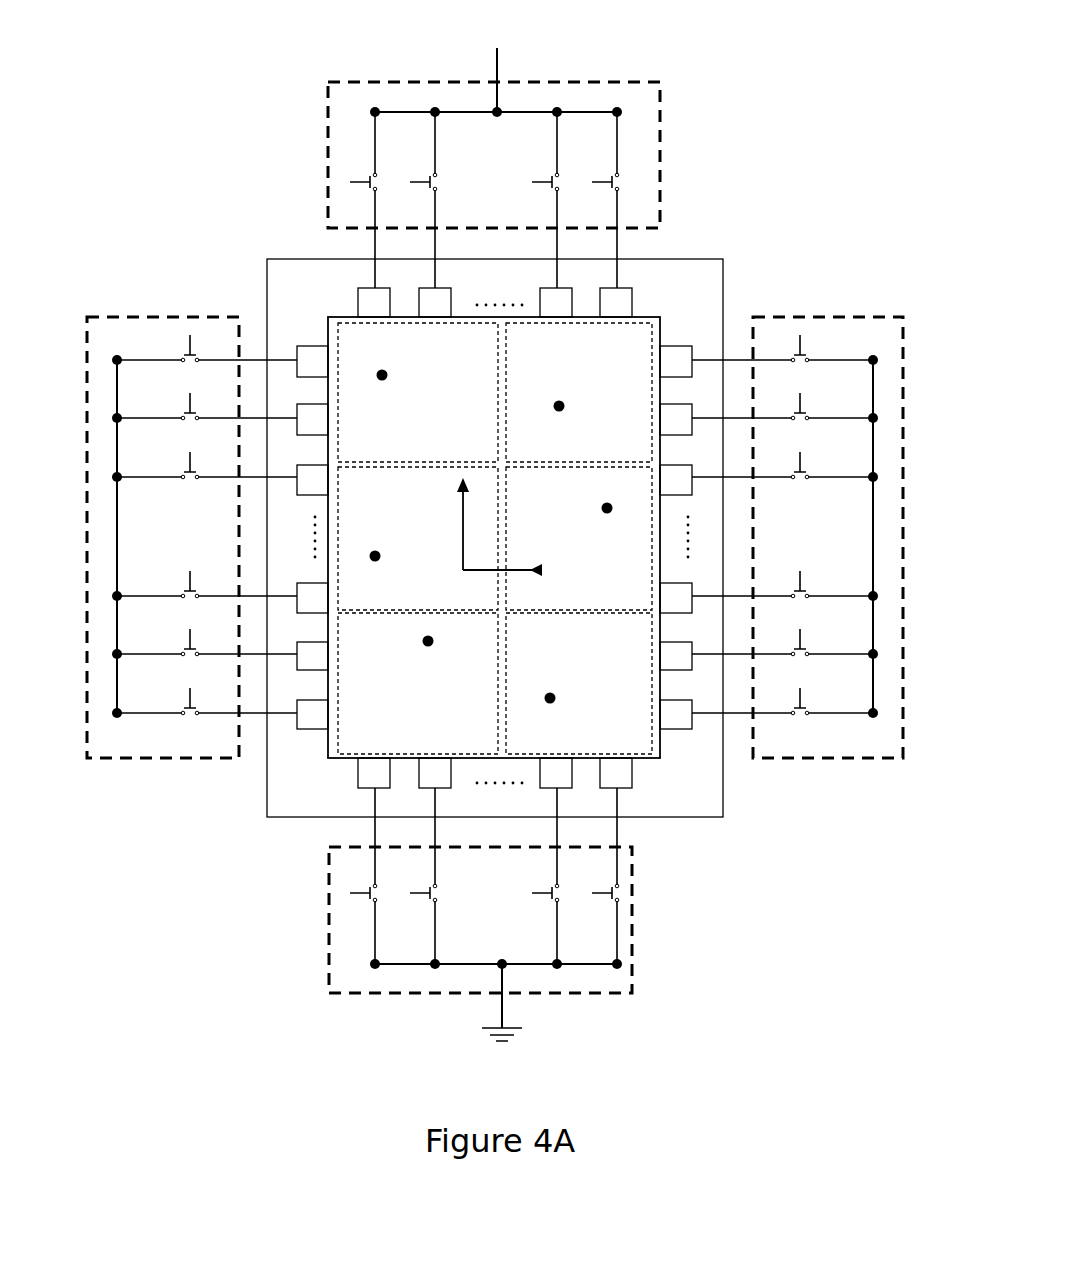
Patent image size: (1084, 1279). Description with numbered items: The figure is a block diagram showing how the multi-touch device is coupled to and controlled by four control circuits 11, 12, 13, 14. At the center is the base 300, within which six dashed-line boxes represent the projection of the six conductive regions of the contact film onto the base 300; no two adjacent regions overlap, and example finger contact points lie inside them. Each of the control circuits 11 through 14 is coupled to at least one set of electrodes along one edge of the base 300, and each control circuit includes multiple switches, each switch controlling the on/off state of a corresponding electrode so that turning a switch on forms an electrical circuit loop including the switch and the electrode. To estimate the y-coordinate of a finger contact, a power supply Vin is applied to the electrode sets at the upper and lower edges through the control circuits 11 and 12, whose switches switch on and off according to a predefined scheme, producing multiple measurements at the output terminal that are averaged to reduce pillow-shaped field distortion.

The control circuit 11 is at (660, 165).
The control circuit 12 is at (632, 935).
The control circuit 13 is at (143, 317).
The control circuit 14 is at (843, 317).
The base 300 is at (518, 745).